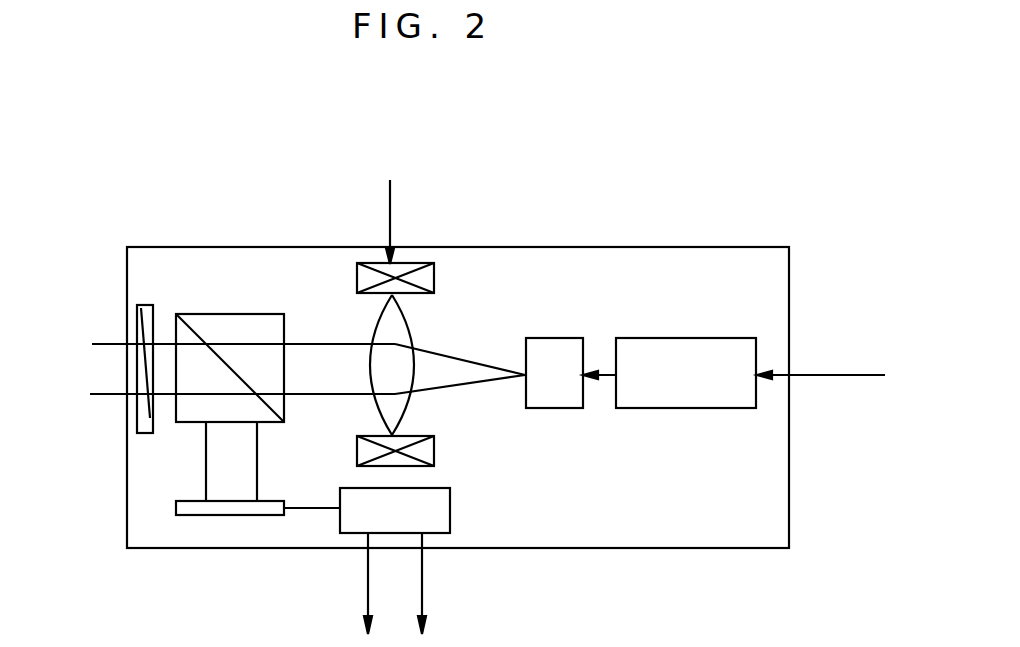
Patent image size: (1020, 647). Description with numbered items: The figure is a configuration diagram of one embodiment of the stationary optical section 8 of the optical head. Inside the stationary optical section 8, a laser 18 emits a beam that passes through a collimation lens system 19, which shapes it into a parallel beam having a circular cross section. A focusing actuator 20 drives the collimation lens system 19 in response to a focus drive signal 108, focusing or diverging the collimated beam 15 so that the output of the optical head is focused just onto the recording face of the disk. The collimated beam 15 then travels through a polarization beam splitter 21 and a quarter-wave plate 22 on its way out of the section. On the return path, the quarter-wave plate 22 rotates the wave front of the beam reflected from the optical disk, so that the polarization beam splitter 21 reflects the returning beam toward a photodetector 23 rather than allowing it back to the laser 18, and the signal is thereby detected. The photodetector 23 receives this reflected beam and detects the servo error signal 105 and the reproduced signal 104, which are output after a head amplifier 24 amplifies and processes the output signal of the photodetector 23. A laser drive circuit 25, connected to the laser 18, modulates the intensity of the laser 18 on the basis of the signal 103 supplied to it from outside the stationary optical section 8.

The stationary optical section 8 is at (633, 248).
The collimated beam 15 is at (100, 368).
The laser 18 is at (568, 408).
The collimation lens system 19 is at (412, 330).
The focusing actuator 20 is at (357, 440).
The polarization beam splitter 21 is at (216, 314).
The λ/4 plate 22 is at (146, 305).
The photodetector 23 is at (220, 512).
The head amplifier 24 is at (442, 512).
The laser drive circuit 25 is at (692, 408).
The signal 103 is at (825, 373).
The reproduced signal 104 is at (425, 595).
The servo error signal 105 is at (362, 598).
The focus drive signal 108 is at (392, 214).